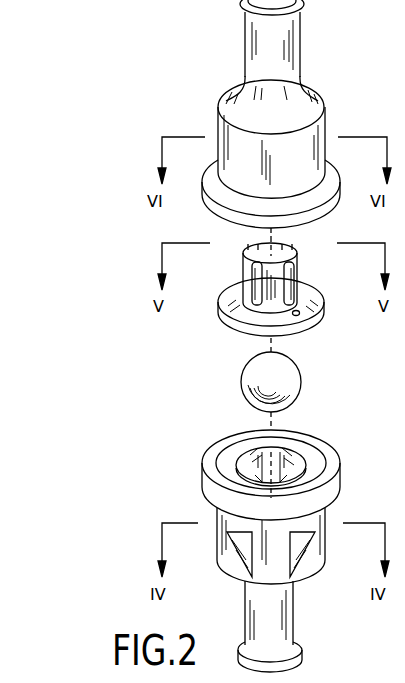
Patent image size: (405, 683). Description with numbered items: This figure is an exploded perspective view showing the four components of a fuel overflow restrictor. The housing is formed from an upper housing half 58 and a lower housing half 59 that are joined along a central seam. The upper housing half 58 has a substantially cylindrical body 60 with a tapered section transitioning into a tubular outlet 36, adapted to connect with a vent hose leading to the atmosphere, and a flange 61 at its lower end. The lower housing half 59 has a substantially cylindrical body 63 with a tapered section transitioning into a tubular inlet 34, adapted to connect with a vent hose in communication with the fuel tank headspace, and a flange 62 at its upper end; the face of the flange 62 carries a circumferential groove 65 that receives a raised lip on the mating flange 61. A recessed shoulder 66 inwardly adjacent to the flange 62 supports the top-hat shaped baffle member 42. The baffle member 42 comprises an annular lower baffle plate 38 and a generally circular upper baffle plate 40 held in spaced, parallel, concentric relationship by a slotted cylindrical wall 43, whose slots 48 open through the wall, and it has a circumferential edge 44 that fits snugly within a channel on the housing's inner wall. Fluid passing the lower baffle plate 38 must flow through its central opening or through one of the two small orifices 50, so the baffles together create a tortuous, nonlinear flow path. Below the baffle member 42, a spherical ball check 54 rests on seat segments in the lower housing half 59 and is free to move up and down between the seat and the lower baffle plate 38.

The inlet opening 34 is at (283, 625).
The outlet opening 36 is at (280, 40).
The lower baffle plate 38 is at (266, 320).
The upper baffle plate 40 is at (262, 255).
The baffle member 42 is at (328, 323).
The slotted cylindrical wall 43 is at (272, 304).
The circumferential edge 44 is at (218, 333).
The slots 48 is at (256, 283).
The small orifices 50 is at (298, 312).
The spherical ball check 54 is at (283, 380).
The upper housing half 58 is at (282, 111).
The lower housing half 59 is at (235, 579).
The cylindrical body 60 is at (305, 135).
The flange 61 is at (215, 208).
The flange 62 is at (215, 492).
The cylindrical body 63 is at (226, 531).
The circumferential groove 65 is at (336, 458).
The recessed shoulder 66 is at (296, 455).